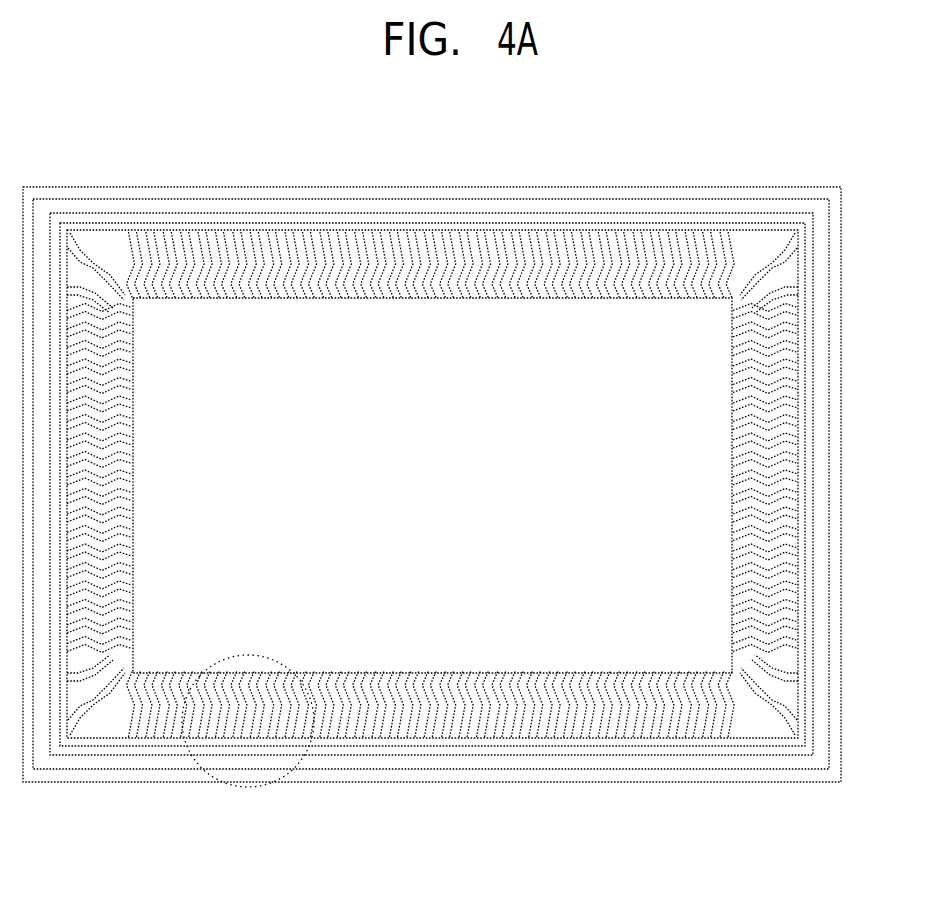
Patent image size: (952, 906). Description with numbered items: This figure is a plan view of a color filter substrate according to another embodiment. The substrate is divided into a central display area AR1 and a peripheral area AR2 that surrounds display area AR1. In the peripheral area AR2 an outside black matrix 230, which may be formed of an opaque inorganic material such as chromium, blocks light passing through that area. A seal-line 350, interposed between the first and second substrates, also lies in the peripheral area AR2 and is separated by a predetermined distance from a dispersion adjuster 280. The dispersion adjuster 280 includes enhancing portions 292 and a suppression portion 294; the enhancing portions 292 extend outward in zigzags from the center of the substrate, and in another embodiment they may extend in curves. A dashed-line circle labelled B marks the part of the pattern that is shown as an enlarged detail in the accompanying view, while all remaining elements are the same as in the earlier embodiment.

The outside black matrix 230 is at (550, 768).
The seal-line 350 is at (82, 762).
The suppression portion 294 is at (480, 753).
The dispersion adjuster 280 is at (498, 850).
The enhancing portions 292 is at (395, 740).
The display area AR1 is at (680, 481).
The peripheral area AR2 is at (770, 514).
The encircled detail region B is at (268, 782).